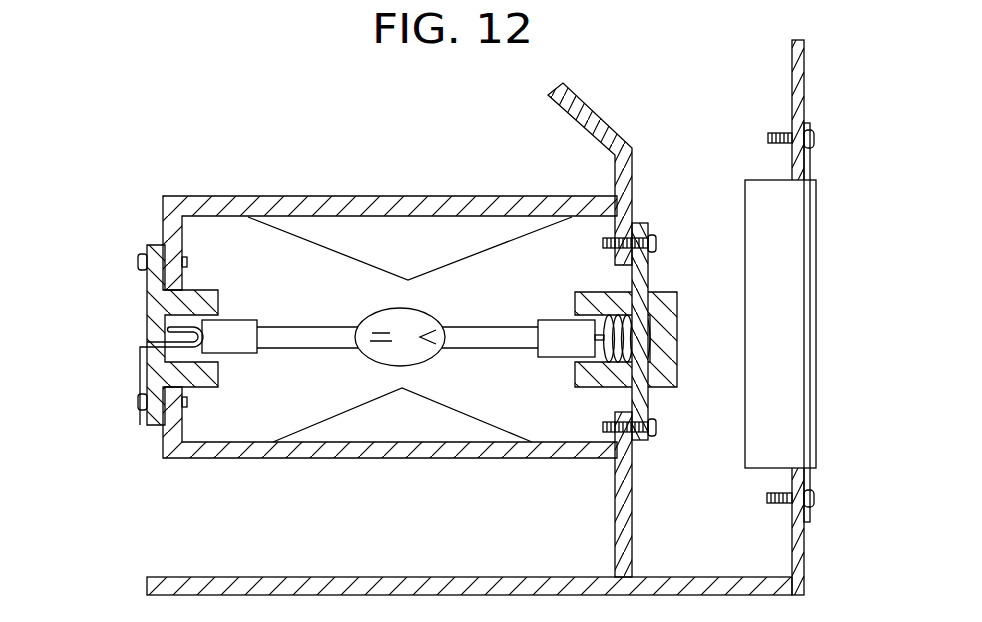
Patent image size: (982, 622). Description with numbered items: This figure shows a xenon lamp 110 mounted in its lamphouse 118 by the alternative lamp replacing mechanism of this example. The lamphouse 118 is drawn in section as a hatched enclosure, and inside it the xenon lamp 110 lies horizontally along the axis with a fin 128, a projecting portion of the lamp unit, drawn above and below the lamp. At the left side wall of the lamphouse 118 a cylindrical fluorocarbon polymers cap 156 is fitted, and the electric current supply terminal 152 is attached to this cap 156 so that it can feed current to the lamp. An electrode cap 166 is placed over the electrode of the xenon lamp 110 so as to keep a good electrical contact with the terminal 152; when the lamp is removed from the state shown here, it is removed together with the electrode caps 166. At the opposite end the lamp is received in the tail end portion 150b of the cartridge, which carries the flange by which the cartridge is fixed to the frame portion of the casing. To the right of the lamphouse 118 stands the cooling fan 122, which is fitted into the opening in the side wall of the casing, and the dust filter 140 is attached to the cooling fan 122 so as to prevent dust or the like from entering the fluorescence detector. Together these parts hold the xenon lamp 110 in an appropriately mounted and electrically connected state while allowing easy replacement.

The xenon lamp 110 is at (470, 322).
The lamphouse 118 is at (372, 457).
The cooling fan 122 is at (790, 376).
The fin 128 is at (338, 254).
The dust filter 140 is at (810, 337).
The tail end portion of the cartridge 150b is at (665, 292).
The electric current supply terminal 152 is at (140, 355).
The cylindrical fluorocarbon polymers cap 156 is at (147, 292).
The electrode cap 166 is at (247, 320).